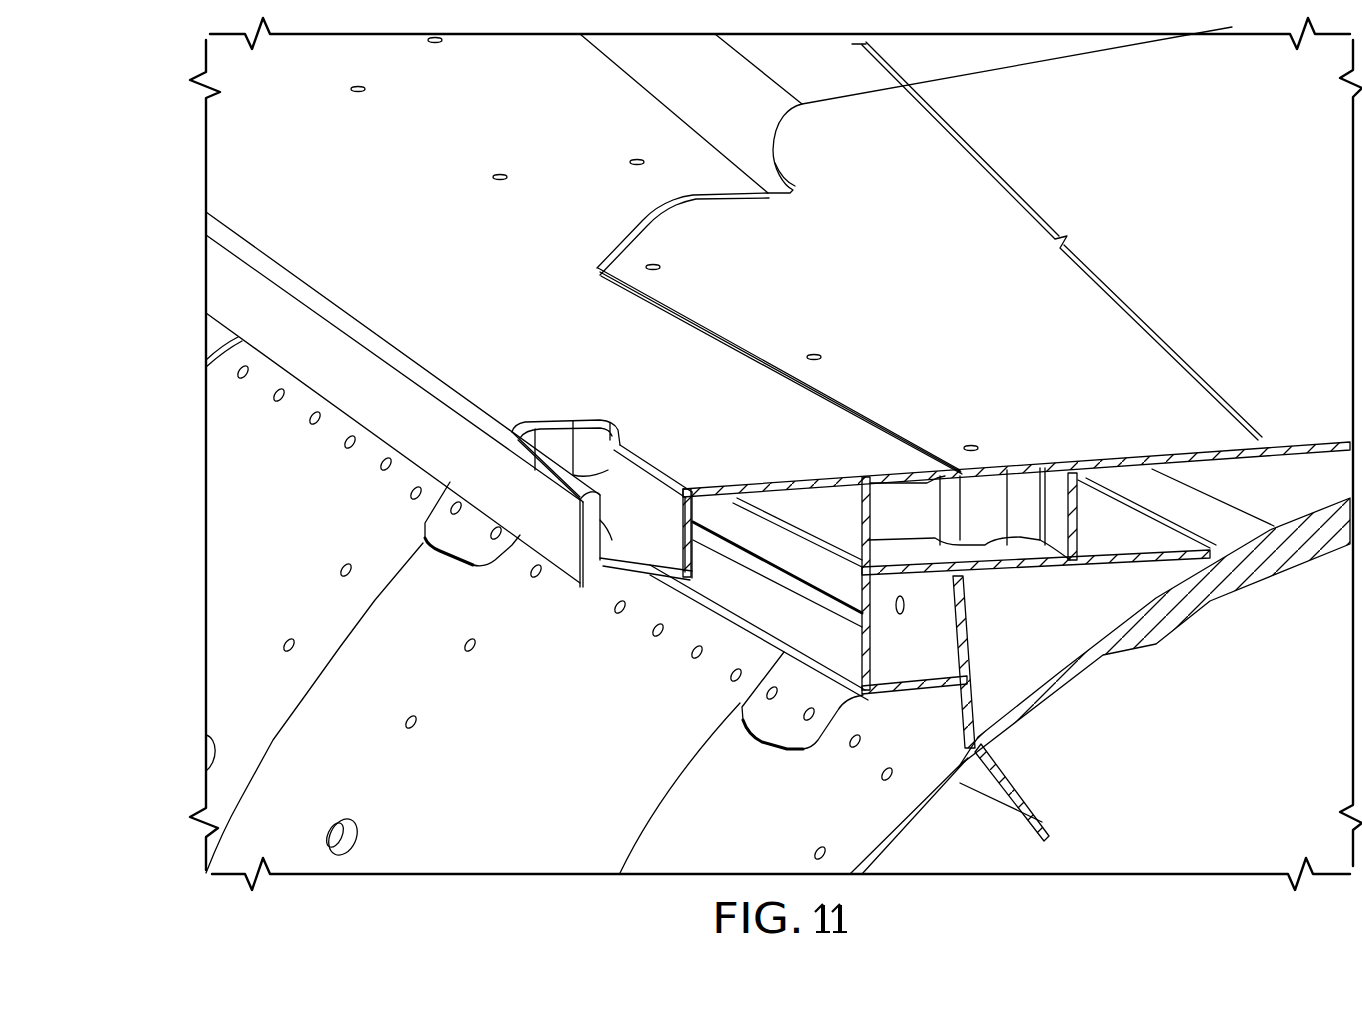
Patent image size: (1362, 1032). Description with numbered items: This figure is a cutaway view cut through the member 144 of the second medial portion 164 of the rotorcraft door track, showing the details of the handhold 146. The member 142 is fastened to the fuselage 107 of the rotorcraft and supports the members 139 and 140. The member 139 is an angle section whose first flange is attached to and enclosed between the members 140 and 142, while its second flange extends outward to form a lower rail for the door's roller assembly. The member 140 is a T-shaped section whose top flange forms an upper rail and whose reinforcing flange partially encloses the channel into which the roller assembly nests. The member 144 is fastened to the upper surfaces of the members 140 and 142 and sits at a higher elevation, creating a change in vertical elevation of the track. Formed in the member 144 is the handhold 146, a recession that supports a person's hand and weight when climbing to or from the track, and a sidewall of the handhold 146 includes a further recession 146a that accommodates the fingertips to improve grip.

The fuselage 107 is at (207, 578).
The member 139 is at (770, 622).
The member 140 is at (890, 553).
The member 142 is at (1152, 565).
The member 144 is at (207, 163).
The handhold 146 is at (551, 400).
The recession 146a is at (612, 536).
The second medial portion 164 is at (1057, 241).